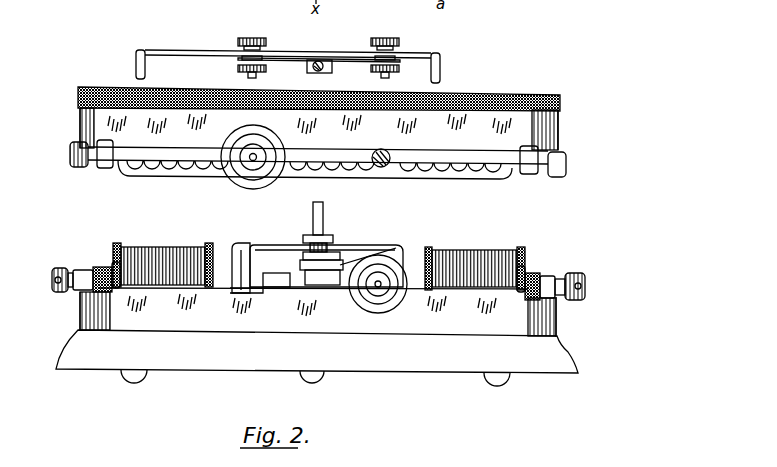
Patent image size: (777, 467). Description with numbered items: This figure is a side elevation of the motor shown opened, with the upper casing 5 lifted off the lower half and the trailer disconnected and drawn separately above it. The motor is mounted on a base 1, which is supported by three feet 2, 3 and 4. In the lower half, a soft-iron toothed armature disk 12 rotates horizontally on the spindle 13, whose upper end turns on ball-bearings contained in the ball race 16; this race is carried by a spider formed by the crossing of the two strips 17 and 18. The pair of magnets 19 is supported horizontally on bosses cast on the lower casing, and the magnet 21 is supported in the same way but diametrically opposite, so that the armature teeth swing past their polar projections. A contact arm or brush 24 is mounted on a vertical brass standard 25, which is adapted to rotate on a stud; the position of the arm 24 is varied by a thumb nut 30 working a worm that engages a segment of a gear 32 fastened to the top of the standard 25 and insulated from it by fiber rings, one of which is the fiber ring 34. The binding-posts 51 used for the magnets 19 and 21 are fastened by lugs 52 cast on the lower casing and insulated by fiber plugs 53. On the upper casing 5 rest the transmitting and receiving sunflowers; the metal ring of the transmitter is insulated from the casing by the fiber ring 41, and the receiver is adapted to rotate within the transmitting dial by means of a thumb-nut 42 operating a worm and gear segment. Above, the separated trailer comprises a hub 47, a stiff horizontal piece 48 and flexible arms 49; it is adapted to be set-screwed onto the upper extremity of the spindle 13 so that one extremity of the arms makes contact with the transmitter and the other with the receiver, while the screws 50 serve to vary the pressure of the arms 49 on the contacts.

The base 1 is at (559, 362).
The foot 2 is at (127, 373).
The foot 3 is at (304, 379).
The foot 4 is at (488, 382).
The upper casing 5 is at (559, 124).
The armature disk 12 is at (268, 279).
The spindle 13 is at (319, 213).
The ball race 16 is at (330, 247).
The strip 17 is at (245, 248).
The strip 18 is at (376, 255).
The pair of magnets 19 is at (472, 253).
The magnet 21 is at (155, 249).
The contact arm or brush 24 is at (366, 250).
The vertical brass standard 25 is at (302, 249).
The thumb nut 30 is at (400, 272).
The segment of a gear 32 is at (326, 255).
The fiber ring 34 is at (336, 266).
The fiber ring 41 is at (527, 97).
The thumb-nut 42 is at (248, 184).
The hub 47 is at (327, 69).
The stiff horizontal piece 48 is at (287, 62).
The flexible arms 49 is at (277, 52).
The screws 50 is at (402, 35).
The binding-posts 51 is at (578, 262).
The lugs 52 is at (565, 226).
The fiber plugs 53 is at (565, 242).